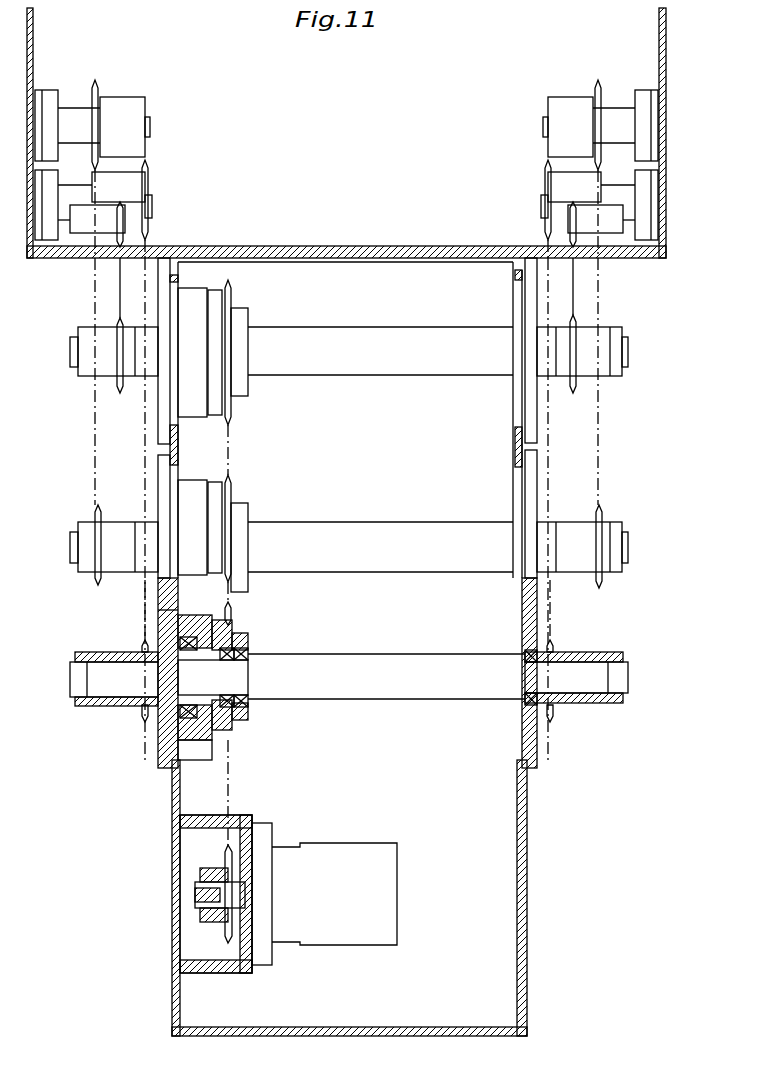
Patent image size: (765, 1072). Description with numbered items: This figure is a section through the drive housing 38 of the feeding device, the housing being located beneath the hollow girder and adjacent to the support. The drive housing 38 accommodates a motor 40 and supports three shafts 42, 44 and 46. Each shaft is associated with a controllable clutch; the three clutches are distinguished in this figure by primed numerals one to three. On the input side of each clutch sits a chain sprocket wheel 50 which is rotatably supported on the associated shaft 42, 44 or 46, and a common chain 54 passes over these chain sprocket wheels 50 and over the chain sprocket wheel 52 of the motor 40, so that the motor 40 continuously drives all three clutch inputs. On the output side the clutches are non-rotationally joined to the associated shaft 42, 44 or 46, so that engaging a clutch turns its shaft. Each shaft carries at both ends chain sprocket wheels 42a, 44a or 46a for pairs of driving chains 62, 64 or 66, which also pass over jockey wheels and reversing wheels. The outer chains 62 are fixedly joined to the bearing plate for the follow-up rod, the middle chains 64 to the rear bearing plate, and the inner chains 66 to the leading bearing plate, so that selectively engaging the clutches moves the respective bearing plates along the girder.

The drive housing 38 is at (535, 802).
The motor 40 is at (400, 890).
The shaft 42 is at (387, 522).
The chain sprocket wheels 42a is at (95, 510).
The shaft 44 is at (366, 337).
The chain sprocket wheels 44a is at (118, 322).
The shaft 46 is at (371, 661).
The chain sprocket wheels 46a is at (146, 712).
The chain sprocket wheel 50 is at (233, 283).
The chain sprocket wheel 52 is at (226, 853).
The common chain 54 is at (232, 800).
The driving chains 62 is at (95, 421).
The driving chains 64 is at (95, 281).
The driving chains 66 is at (145, 600).